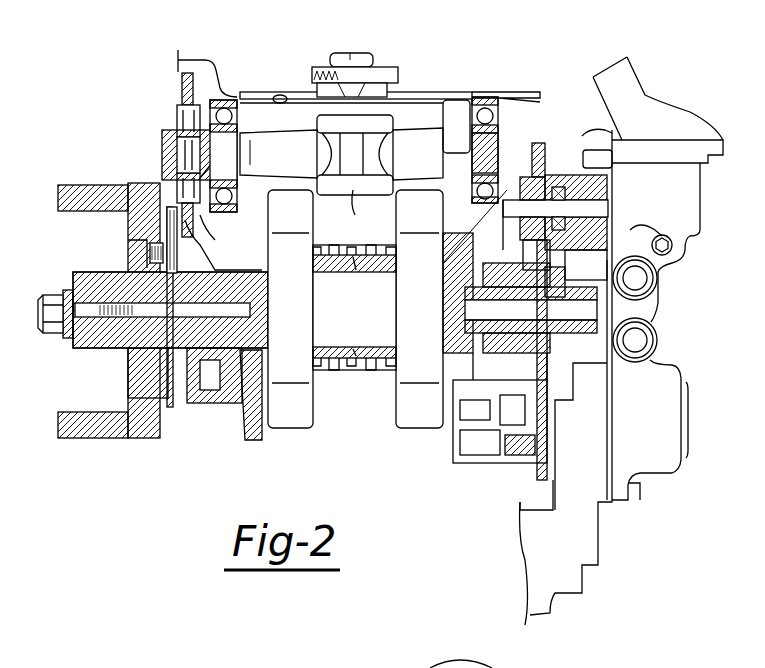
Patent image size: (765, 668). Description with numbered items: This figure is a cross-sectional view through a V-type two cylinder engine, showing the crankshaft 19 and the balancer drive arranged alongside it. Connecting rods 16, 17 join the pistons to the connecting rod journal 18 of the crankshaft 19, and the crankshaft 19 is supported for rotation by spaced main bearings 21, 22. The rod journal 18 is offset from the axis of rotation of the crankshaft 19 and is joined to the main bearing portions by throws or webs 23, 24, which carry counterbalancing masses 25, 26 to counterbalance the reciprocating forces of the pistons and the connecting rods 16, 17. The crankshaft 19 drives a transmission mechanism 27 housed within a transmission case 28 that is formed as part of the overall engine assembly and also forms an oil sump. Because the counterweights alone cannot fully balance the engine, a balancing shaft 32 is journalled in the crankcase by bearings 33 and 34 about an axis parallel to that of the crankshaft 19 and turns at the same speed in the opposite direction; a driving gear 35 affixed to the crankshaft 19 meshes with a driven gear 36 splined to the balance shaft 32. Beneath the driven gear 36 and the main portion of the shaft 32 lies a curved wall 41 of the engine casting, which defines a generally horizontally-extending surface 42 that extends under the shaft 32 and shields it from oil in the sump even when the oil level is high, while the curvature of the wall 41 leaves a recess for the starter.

The connecting rod 16 is at (335, 368).
The connecting rod 17 is at (378, 368).
The connecting rod journal 18 is at (354, 330).
The crankshaft 19 is at (120, 330).
The main bearing 21 is at (233, 373).
The main bearing 22 is at (470, 340).
The throw or web 23 is at (289, 327).
The throw or web 24 is at (419, 346).
The counterbalancing mass 25 is at (290, 428).
The counterbalancing mass 26 is at (422, 428).
The transmission mechanism 27 is at (498, 248).
The transmission case 28 is at (437, 92).
The balancing shaft 32 is at (293, 174).
The bearing 33 is at (222, 100).
The bearing 34 is at (483, 92).
The driving gear 35 is at (200, 380).
The driven gear 36 is at (177, 105).
The curved wall 41 is at (252, 97).
The horizontally-extending surface 42 is at (278, 96).